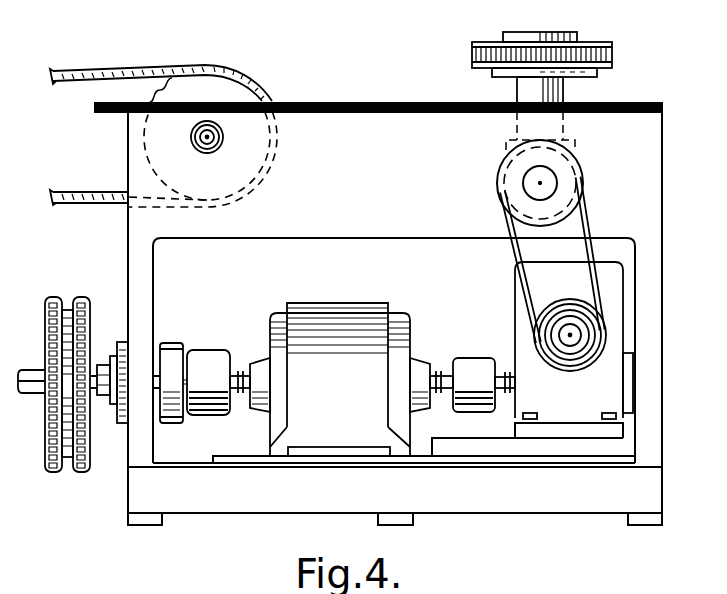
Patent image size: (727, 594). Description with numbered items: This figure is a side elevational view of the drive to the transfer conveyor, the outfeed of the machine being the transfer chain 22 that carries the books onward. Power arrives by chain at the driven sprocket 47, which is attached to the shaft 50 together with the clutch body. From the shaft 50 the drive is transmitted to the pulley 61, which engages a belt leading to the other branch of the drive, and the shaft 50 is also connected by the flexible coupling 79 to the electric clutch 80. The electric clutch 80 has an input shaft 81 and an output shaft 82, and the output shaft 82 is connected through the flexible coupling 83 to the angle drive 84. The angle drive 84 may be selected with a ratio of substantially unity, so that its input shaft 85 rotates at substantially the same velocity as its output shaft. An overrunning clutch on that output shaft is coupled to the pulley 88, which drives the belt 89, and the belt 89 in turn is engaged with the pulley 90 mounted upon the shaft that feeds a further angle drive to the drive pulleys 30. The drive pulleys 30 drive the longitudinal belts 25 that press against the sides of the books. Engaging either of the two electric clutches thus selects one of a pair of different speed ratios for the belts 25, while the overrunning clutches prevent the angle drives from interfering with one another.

The transfer chain 22 is at (136, 68).
The drive pulleys 30 is at (598, 45).
The pulley 90 is at (497, 186).
The belts 25 is at (548, 183).
The belt 89 is at (587, 237).
The pulley 88 is at (560, 352).
The angle drive 84 is at (584, 410).
The input shaft 85 is at (500, 376).
The flexible coupling 83 is at (467, 358).
The output shaft 82 is at (440, 374).
The electric clutch 80 is at (345, 402).
The input shaft 81 is at (240, 376).
The flexible coupling 79 is at (207, 350).
The pulley 61 is at (172, 344).
The shaft 50 is at (92, 385).
The driven sprocket 47 is at (81, 472).